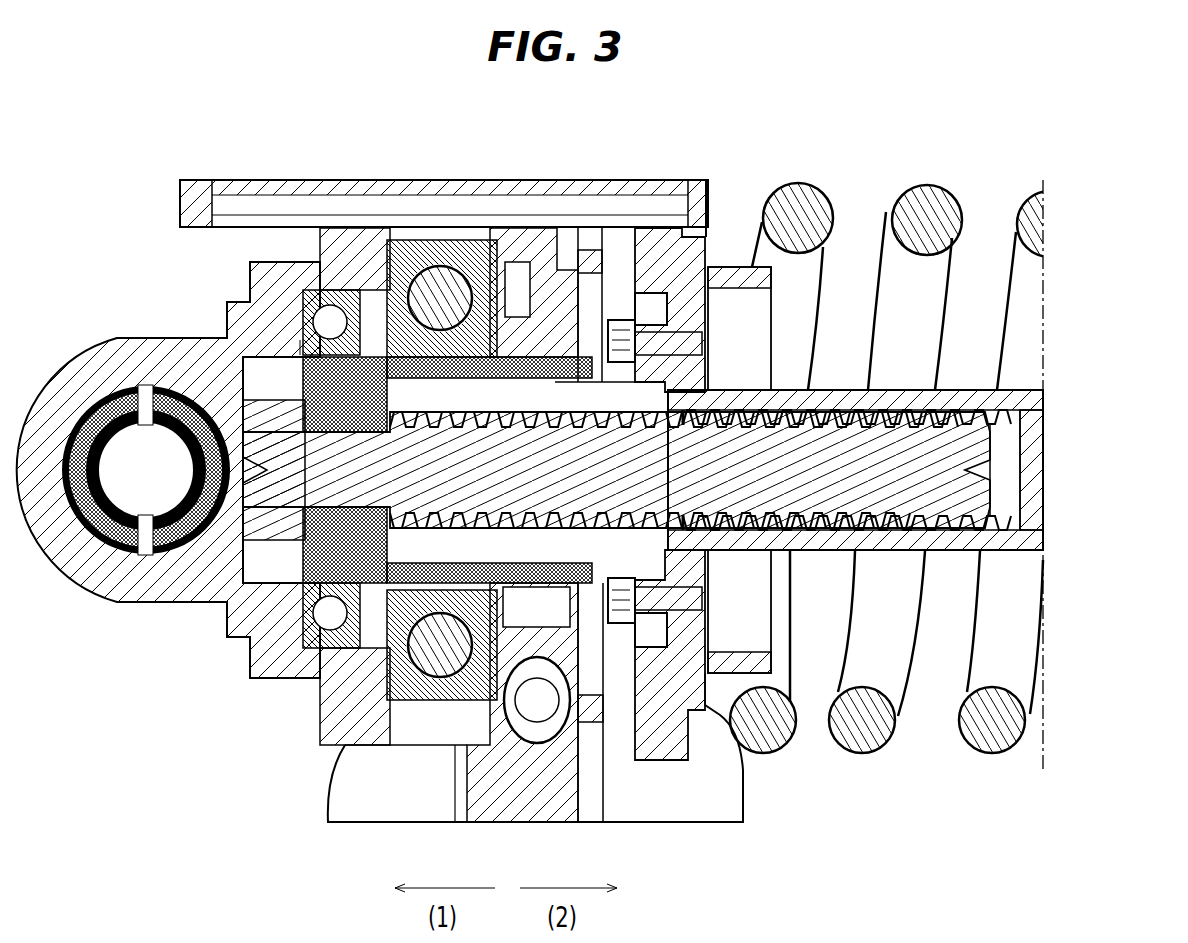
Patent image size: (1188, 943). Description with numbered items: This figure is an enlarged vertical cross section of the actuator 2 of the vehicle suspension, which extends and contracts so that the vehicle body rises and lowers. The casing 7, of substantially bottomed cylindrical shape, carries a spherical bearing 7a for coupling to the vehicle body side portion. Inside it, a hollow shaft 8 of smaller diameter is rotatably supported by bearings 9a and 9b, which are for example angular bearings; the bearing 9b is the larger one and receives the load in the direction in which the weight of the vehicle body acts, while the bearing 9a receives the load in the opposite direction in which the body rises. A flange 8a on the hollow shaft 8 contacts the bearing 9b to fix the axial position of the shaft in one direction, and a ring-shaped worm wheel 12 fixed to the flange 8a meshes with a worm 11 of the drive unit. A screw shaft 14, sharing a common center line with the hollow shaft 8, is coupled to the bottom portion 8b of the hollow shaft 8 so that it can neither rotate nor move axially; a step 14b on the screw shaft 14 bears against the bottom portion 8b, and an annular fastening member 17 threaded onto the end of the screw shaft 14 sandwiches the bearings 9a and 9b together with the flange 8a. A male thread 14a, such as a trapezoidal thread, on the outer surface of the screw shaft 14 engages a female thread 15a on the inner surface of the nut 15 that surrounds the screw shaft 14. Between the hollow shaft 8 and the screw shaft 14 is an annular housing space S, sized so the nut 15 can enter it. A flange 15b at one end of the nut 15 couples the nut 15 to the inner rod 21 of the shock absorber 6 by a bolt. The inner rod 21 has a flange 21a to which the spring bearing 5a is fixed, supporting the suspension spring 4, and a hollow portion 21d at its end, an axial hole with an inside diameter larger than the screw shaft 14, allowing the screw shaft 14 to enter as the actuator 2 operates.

The actuator 2 is at (759, 97).
The suspension spring 4 is at (1050, 204).
The spring bearing 5a is at (775, 217).
The shock absorber 6 is at (1036, 376).
The casing 7 is at (270, 655).
The spherical bearing 7a is at (128, 556).
The hollow shaft 8 is at (470, 300).
The flange 8a is at (512, 330).
The bottom portion 8b is at (243, 333).
The bearing 9a is at (318, 300).
The bearing 9b is at (428, 245).
The worm 11 is at (598, 690).
The worm wheel 12 is at (620, 650).
The screw shaft 14 is at (372, 285).
The male thread 14a is at (410, 262).
The step 14b is at (332, 650).
The nut 15 is at (622, 320).
The female thread 15a is at (672, 262).
The flange 15b is at (650, 300).
The fastening member 17 is at (222, 560).
The inner rod 21 is at (970, 400).
The flange 21a is at (728, 275).
The hollow portion 21d is at (1000, 522).
The housing space S is at (315, 380).